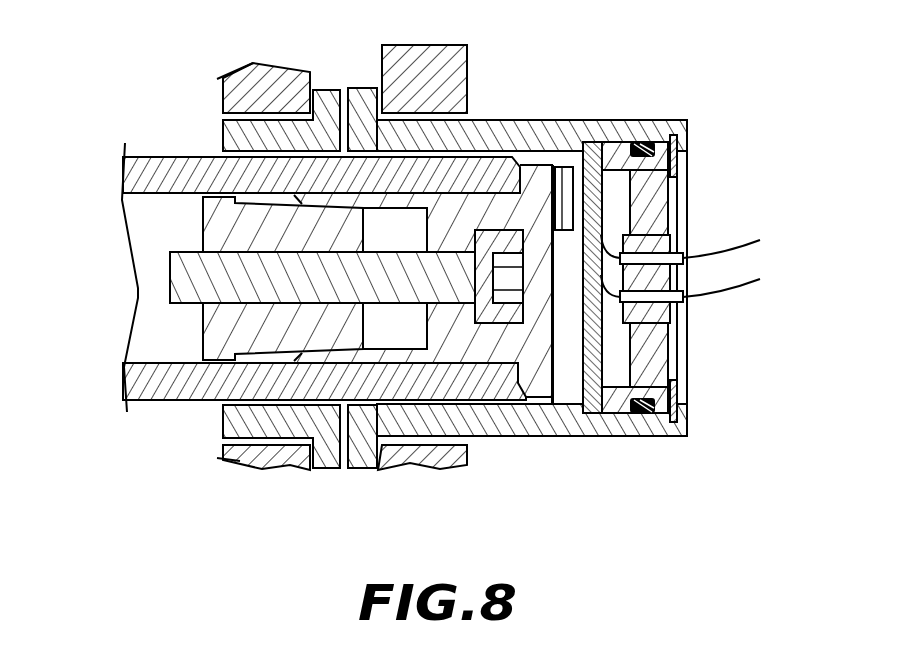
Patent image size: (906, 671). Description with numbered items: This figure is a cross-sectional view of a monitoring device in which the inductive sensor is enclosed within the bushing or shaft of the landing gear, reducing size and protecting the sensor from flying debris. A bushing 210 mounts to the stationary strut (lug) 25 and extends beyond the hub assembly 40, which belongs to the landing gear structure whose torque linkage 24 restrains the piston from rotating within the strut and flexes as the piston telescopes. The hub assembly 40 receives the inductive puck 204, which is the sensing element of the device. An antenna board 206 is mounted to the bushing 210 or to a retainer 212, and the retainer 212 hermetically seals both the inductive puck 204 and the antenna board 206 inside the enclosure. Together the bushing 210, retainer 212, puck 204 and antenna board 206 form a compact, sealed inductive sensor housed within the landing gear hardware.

The torque linkage 24 is at (262, 93).
The stationary strut (lug) 25 is at (425, 60).
The hub assembly 40 is at (172, 333).
The inductive puck 204 is at (567, 175).
The antenna board 206 is at (595, 148).
The bushing 210 is at (490, 130).
The retainer 212 is at (655, 355).